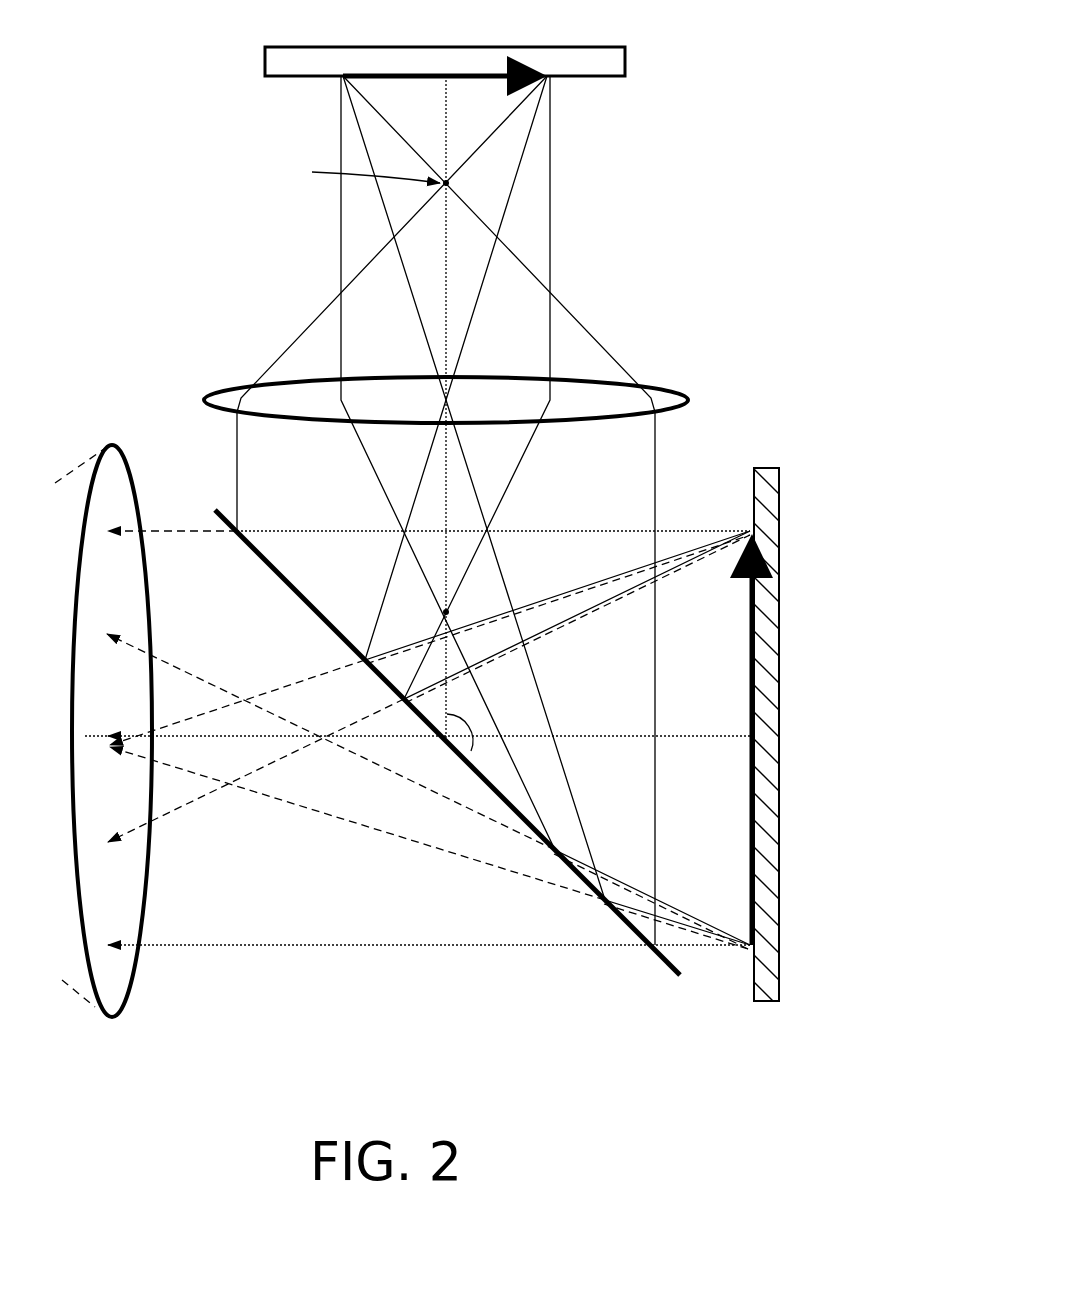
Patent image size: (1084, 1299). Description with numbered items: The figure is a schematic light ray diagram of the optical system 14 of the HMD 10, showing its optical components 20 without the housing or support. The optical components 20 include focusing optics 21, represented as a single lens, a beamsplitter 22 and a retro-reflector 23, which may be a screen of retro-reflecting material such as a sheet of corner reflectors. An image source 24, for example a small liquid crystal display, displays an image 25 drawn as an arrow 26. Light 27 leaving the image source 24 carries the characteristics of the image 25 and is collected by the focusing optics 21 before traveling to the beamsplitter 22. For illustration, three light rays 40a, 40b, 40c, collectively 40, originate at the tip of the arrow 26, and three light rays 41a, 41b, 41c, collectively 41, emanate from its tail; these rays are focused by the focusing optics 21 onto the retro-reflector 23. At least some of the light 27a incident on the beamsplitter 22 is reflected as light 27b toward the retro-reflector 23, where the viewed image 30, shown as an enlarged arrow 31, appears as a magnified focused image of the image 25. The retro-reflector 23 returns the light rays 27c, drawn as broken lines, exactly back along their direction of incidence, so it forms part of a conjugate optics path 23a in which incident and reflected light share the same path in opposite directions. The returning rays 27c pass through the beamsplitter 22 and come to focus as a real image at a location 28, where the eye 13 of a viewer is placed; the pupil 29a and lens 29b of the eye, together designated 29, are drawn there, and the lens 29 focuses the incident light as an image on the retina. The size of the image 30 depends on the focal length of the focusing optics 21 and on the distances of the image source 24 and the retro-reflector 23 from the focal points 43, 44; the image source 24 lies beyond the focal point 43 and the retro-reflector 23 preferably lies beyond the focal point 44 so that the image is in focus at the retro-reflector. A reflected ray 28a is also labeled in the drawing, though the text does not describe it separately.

The HMD 10 is at (758, 80).
The eye 13 is at (145, 763).
The optical system 14 is at (480, 350).
The optical components 20 is at (254, 351).
The focusing optics 21 is at (480, 368).
The beamsplitter 22 is at (627, 926).
The retro-reflector 23 is at (753, 996).
The conjugate optics path 23a is at (463, 752).
The image source 24 is at (596, 77).
The image 25 is at (549, 80).
The arrow 26 is at (479, 82).
The light 27 is at (559, 184).
The light incident on beamsplitter 27a is at (663, 474).
The reflected light 27b is at (697, 526).
The light rays 27c is at (567, 527).
The location 28 is at (122, 715).
The light ray reflected by beamsplitter 28a is at (343, 556).
The pupil and lens of the eye 29 is at (156, 915).
The pupil 29a is at (130, 1003).
The lens of the eye 29b is at (138, 868).
The viewed image 30 is at (752, 640).
The enlarged arrow 31 is at (752, 696).
The light rays 40 is at (493, 389).
The light ray 40a is at (489, 138).
The light ray 40b is at (503, 224).
The light ray 40c is at (551, 268).
The light rays 41 is at (498, 510).
The light ray 41a is at (402, 137).
The light ray 41b is at (357, 117).
The light ray 41c is at (341, 146).
The focal point 43 is at (444, 190).
The focal point 44 is at (443, 612).